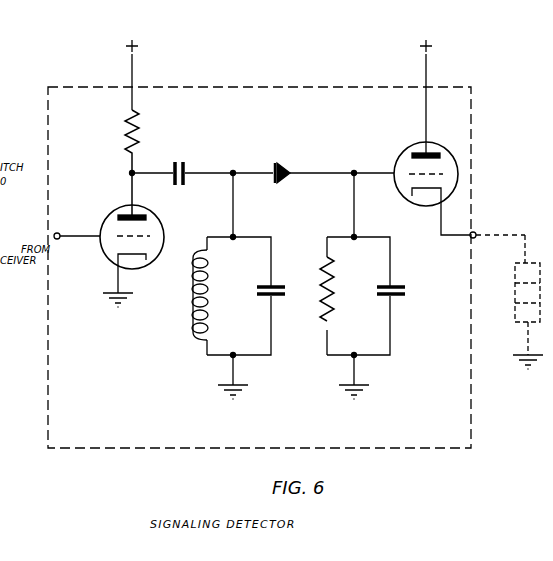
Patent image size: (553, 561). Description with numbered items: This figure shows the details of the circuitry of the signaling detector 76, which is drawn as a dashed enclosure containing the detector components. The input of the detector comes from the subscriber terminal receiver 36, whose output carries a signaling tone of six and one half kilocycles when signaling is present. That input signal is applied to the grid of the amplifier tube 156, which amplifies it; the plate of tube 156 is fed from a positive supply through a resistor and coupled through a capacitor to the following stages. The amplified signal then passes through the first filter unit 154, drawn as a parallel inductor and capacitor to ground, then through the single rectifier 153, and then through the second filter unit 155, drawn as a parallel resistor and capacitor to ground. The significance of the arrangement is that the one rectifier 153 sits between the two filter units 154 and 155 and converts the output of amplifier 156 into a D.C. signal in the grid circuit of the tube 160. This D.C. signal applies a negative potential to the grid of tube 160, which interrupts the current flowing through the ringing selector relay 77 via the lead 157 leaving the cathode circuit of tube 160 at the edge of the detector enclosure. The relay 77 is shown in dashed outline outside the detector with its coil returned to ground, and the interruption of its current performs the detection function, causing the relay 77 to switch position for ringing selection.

The signaling detector 76 is at (243, 87).
The subscriber terminal receiver 36 is at (77, 250).
The amplifier tube 156 is at (107, 217).
The rectifier 153 is at (288, 168).
The filter unit 154 is at (238, 317).
The filter unit 155 is at (362, 317).
The tube 160 is at (403, 148).
The lead 157 is at (499, 231).
The ringing selector relay 77 is at (510, 290).